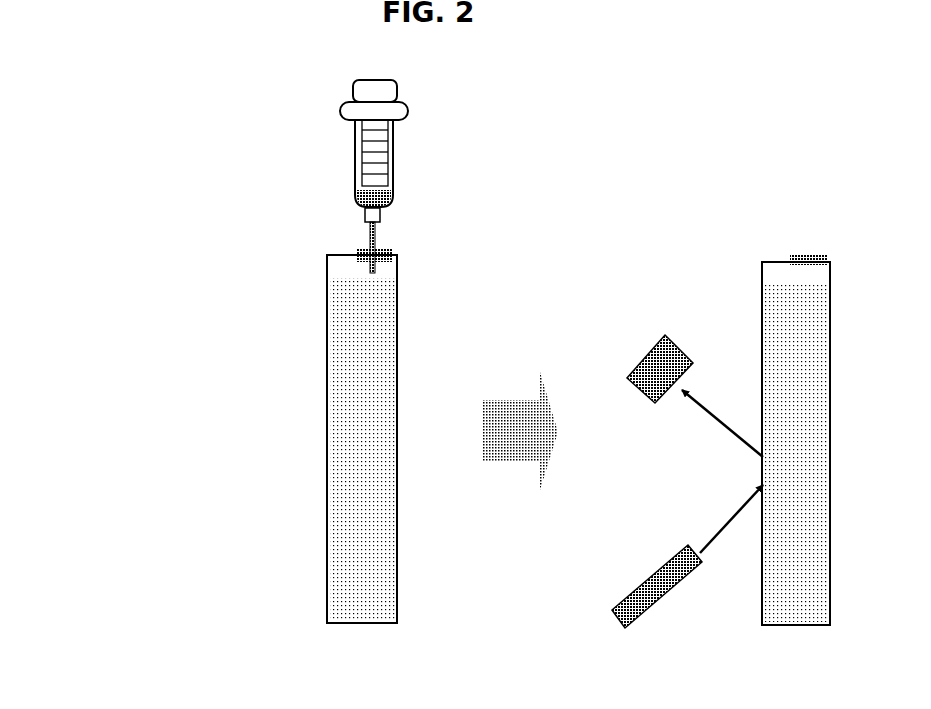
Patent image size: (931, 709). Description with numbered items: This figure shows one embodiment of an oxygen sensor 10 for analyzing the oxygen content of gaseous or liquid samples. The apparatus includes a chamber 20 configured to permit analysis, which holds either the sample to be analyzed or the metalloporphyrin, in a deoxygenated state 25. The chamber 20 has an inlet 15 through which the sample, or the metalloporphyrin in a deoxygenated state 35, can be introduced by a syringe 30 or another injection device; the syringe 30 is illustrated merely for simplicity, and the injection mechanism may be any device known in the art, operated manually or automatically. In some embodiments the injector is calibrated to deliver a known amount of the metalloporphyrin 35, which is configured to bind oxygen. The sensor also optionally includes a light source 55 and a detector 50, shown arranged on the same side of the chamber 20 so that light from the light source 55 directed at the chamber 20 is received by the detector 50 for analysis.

The detection system 10 is at (77, 532).
The inlet 15 is at (387, 248).
The chamber 20 is at (327, 322).
The deoxygenated state 25 is at (347, 462).
The syringe 30 is at (348, 198).
The metalloporphyrin in a deoxygenated state 35 is at (390, 190).
The detector 50 is at (657, 343).
The light source 55 is at (613, 617).